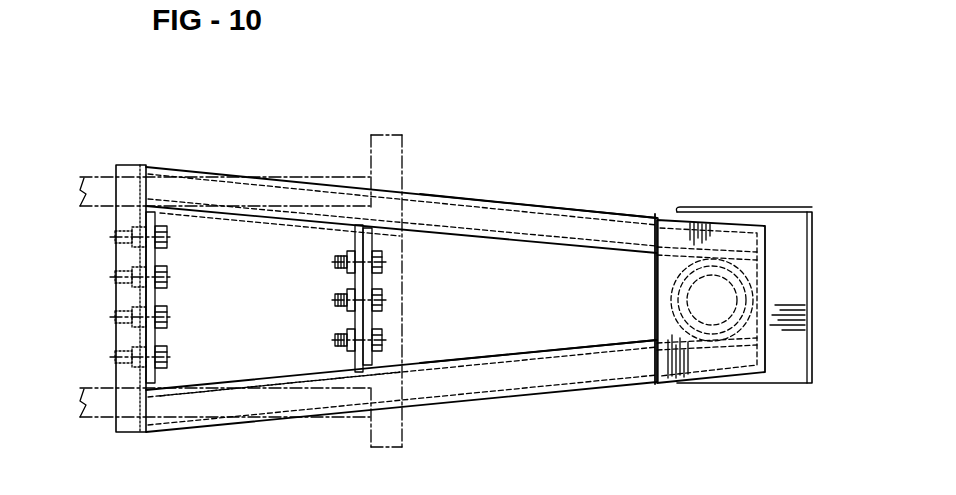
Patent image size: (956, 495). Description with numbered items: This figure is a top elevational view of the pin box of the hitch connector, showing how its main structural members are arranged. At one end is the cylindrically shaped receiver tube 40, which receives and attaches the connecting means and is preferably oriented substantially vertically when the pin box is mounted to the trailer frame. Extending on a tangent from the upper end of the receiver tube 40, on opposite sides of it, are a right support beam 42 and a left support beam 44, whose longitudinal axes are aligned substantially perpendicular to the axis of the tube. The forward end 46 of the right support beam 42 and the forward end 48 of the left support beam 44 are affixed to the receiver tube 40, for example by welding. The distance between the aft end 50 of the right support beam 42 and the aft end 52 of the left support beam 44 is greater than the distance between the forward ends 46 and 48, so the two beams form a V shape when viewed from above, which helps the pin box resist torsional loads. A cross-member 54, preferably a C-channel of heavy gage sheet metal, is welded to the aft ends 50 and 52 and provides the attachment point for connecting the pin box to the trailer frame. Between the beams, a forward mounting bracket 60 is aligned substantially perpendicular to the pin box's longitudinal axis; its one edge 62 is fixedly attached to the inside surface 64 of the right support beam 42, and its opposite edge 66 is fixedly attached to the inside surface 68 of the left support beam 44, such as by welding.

The receiver tube 40 is at (672, 312).
The right support beam 42 is at (508, 380).
The left support beam 44 is at (528, 217).
The forward end of beam 42 46 is at (738, 383).
The forward end of beam 44 48 is at (748, 224).
The aft end of beam 42 50 is at (158, 433).
The aft end of beam 44 52 is at (158, 166).
The cross-member 54 is at (131, 168).
The forward mounting bracket 60 is at (353, 233).
The edge of mounting bracket 62 is at (362, 372).
The inside surface of right support beam 64 is at (232, 378).
The opposite edge of mounting bracket 66 is at (358, 225).
The inside surface of left support beam 68 is at (245, 218).